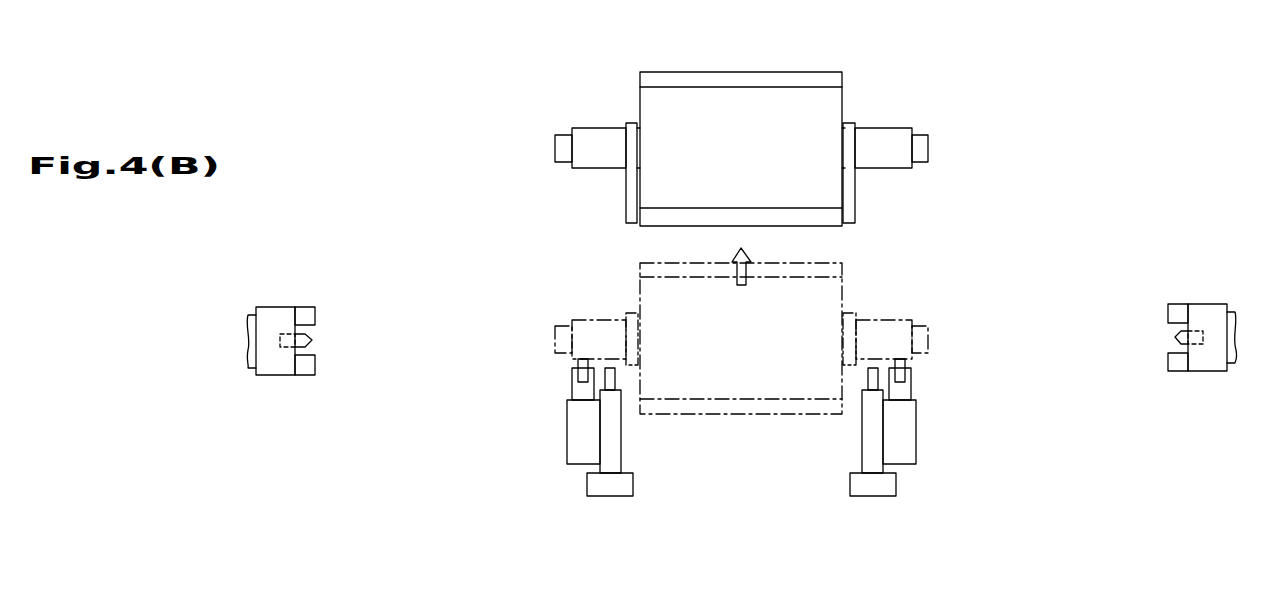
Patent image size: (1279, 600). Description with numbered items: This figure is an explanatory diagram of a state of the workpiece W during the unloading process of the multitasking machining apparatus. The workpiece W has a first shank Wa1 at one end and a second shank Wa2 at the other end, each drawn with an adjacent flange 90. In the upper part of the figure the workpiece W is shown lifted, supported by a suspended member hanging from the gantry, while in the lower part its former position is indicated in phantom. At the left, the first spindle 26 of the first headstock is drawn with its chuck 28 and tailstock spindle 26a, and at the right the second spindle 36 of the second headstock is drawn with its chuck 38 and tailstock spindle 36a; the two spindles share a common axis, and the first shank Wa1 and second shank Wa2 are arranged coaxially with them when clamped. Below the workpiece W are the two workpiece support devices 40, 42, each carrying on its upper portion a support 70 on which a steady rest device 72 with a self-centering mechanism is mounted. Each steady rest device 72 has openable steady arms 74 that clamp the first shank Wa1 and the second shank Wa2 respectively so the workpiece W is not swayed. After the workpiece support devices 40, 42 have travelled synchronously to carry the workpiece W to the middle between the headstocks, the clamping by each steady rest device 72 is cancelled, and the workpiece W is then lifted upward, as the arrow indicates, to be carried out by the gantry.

The workpiece W is at (736, 76).
The first shank Wa1 is at (603, 127).
The second shank Wa2 is at (878, 127).
The flange 90 is at (626, 203).
The first spindle 26 is at (252, 307).
The chuck 28 is at (284, 307).
The tailstock spindle 26a is at (312, 339).
The second spindle 36 is at (1230, 304).
The chuck 38 is at (1200, 304).
The tailstock spindle 36a is at (1175, 337).
The workpiece support device 40 is at (530, 422).
The workpiece support device 42 is at (950, 422).
The support 70 is at (623, 453).
The steady rest device 72 is at (567, 451).
The steady arms 74 is at (572, 388).